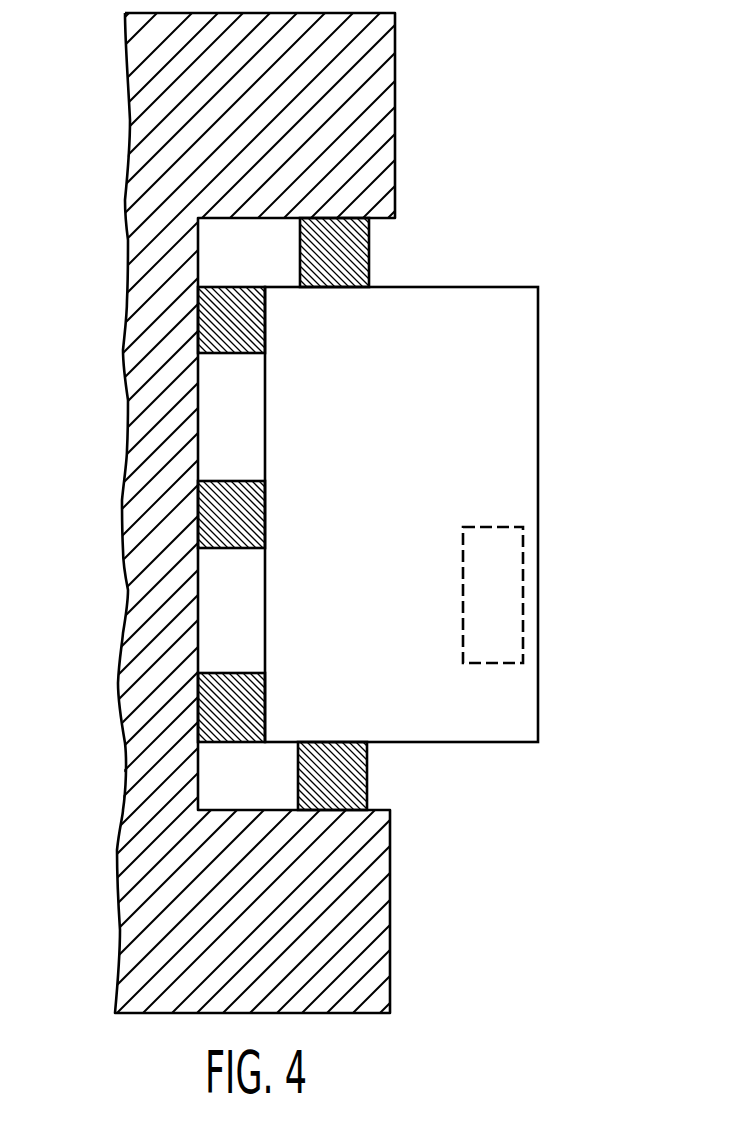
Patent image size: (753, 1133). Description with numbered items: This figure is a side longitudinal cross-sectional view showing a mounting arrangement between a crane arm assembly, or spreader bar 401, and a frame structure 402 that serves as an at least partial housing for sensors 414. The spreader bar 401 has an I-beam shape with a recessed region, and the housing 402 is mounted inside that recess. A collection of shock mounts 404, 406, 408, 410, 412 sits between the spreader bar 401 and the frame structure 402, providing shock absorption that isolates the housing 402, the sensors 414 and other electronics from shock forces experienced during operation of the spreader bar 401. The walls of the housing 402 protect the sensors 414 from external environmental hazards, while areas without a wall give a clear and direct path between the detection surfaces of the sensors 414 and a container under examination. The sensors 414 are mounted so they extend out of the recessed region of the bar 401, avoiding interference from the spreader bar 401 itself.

The crane arm assembly (spreader bar) 401 is at (148, 157).
The frame structure (housing) 402 is at (538, 308).
The shock mount 404 is at (370, 257).
The shock mount 406 is at (367, 778).
The shock mount 408 is at (231, 744).
The shock mount 410 is at (228, 287).
The shock mount 412 is at (231, 550).
The sensors 414 is at (488, 527).